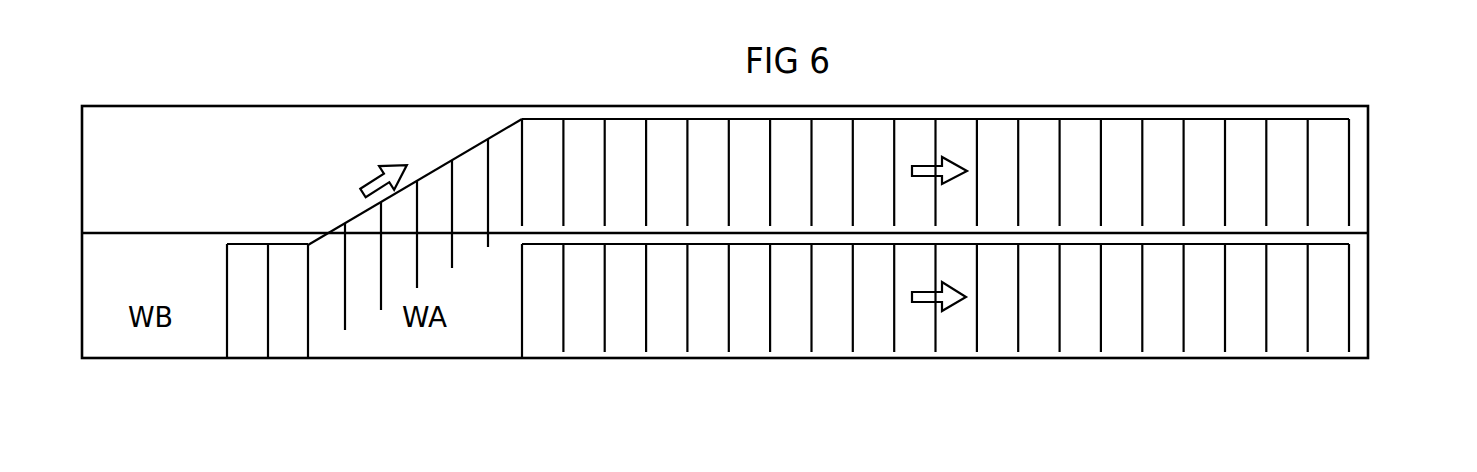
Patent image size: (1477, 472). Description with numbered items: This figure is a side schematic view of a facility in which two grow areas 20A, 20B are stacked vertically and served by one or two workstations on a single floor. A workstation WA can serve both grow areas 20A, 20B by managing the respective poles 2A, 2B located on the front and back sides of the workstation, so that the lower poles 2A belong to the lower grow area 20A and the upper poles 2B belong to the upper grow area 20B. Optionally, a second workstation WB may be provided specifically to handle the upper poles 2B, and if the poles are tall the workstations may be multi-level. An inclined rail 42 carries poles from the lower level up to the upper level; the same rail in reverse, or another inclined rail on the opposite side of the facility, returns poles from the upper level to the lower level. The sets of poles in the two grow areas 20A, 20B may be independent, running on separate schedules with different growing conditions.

The inclined rail 42 is at (357, 213).
The pole 2A is at (523, 325).
The pole 2B is at (227, 325).
The grow area 20A is at (1378, 295).
The grow area 20B is at (1378, 170).